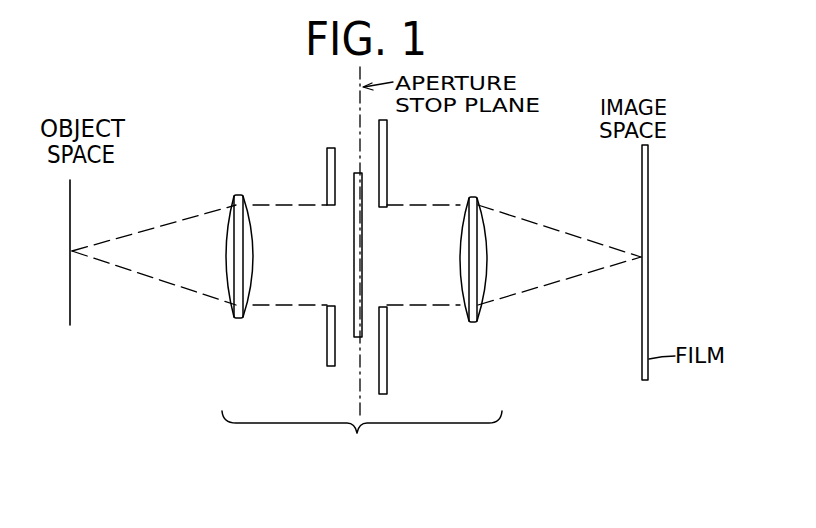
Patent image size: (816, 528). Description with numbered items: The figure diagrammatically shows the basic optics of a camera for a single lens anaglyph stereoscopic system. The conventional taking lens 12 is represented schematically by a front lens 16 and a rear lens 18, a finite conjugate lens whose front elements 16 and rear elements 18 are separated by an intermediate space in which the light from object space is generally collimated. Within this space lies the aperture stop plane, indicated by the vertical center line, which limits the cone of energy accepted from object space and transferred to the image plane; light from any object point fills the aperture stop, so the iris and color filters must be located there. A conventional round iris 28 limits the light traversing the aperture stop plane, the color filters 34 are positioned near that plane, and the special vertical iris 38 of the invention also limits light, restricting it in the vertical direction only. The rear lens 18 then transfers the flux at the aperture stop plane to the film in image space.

The taking lens 12 is at (362, 437).
The front lens 16 is at (238, 195).
The rear lens 18 is at (476, 197).
The round iris 28 is at (327, 339).
The color filters 34 is at (359, 172).
The vertical iris 38 is at (388, 147).